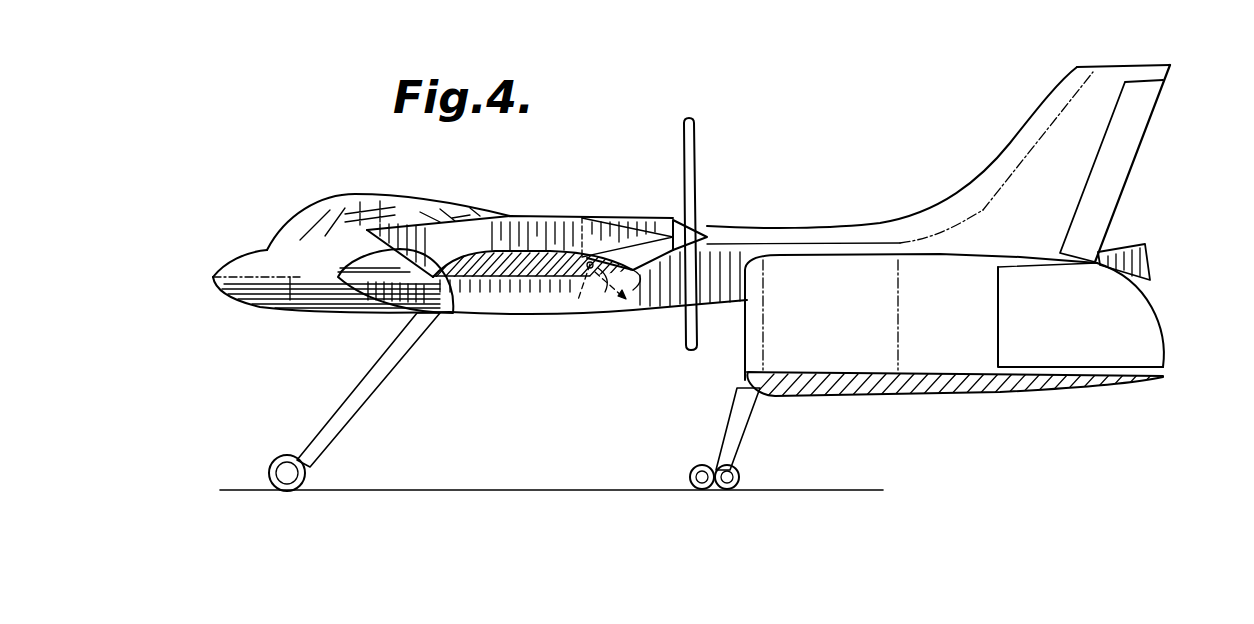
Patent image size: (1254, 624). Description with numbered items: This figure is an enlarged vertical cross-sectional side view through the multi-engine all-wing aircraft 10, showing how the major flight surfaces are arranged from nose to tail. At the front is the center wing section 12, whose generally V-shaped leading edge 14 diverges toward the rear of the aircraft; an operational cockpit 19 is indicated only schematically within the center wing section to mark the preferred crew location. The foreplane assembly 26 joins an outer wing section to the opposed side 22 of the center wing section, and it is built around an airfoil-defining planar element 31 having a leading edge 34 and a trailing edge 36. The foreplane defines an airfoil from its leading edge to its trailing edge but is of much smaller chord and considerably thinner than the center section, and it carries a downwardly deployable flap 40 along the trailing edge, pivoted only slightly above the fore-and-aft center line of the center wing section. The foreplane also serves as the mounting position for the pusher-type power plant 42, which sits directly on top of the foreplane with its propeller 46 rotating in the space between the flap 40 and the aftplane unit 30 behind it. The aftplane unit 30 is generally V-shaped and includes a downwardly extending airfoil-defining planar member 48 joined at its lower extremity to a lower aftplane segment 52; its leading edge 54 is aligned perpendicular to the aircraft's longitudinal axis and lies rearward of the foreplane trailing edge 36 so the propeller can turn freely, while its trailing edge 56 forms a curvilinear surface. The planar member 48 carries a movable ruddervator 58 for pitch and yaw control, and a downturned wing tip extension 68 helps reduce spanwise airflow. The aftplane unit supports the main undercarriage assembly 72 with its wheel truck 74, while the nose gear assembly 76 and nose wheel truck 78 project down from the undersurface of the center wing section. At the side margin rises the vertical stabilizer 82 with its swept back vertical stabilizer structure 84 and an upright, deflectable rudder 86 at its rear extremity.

The multi-engine all-wing aircraft 10 is at (693, 255).
The center wing section 12 is at (308, 283).
The leading edge 14 is at (273, 301).
The operational cockpit 19 is at (340, 201).
The opposed side 22 is at (730, 246).
The foreplane assembly 26 is at (487, 248).
The aftplane unit 30 is at (952, 325).
The planar element 31 is at (507, 270).
The leading edge 34 is at (453, 314).
The trailing edge 36 is at (627, 290).
The flap 40 is at (588, 302).
The power plant 42 is at (537, 211).
The propeller 46 is at (682, 127).
The airfoil defining planar member 48 is at (957, 272).
The lower aftplane segment 52 is at (935, 385).
The leading edge 54 is at (745, 388).
The trailing edge 56 is at (1170, 374).
The ruddervator 58 is at (1130, 305).
The downturned wing tip extension 68 is at (1147, 262).
The main undercarriage assembly 72 is at (746, 440).
The wheel truck 74 is at (698, 468).
The nose gear assembly 76 is at (373, 394).
The nose wheel truck 78 is at (277, 465).
The vertical stabilizer 82 is at (1072, 141).
The swept back vertical stabilizer structure 84 is at (1115, 70).
The rudder 86 is at (1143, 131).